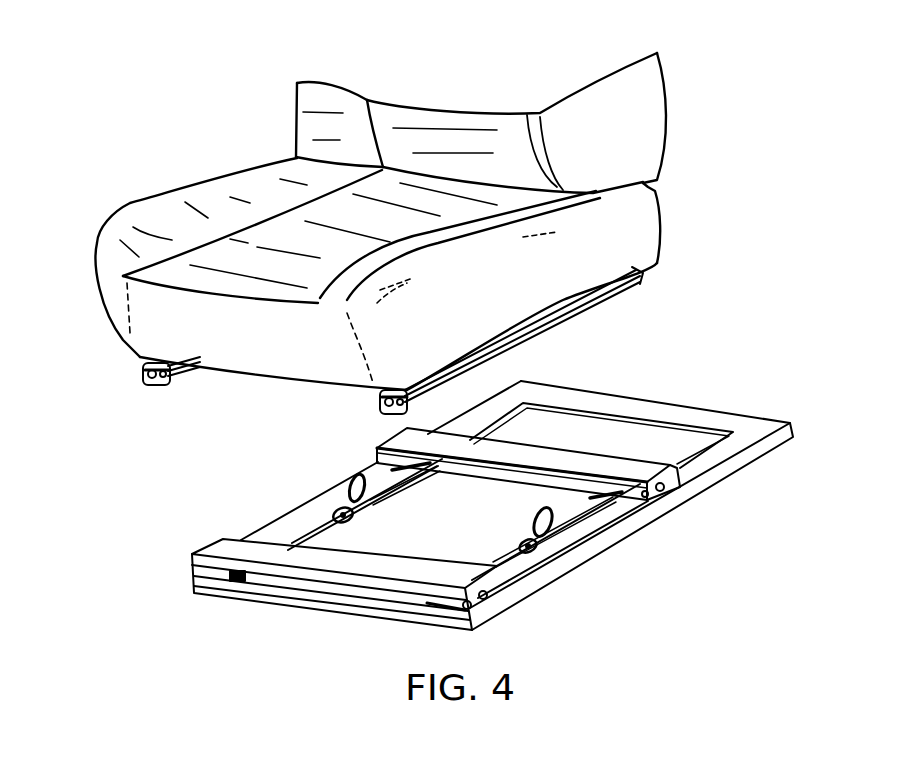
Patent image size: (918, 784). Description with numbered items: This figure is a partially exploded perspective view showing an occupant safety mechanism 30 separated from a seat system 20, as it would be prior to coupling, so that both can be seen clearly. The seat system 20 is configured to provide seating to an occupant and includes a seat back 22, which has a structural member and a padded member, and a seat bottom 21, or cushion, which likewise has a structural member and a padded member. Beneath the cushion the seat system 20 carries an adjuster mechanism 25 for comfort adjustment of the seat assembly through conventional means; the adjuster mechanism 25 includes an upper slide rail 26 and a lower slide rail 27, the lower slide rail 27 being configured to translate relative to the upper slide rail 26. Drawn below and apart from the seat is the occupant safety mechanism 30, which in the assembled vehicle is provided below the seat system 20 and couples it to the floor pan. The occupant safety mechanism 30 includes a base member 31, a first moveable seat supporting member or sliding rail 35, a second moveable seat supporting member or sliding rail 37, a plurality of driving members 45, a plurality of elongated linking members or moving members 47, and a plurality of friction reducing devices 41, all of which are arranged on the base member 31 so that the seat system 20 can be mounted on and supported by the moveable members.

The seat system 20 is at (386, 221).
The seat bottom 21 is at (93, 280).
The seat back 22 is at (648, 103).
The adjuster mechanism 25 is at (385, 356).
The upper slide rail 26 is at (143, 358).
The lower slide rail 27 is at (180, 372).
The occupant safety mechanism 30 is at (436, 504).
The base member 31 is at (670, 403).
The first moveable seat supporting member 35 is at (220, 546).
The second moveable seat supporting member 37 is at (527, 457).
The friction reducing devices 41 is at (352, 455).
The driving members 45 is at (375, 500).
The elongated linking members 47 is at (338, 538).